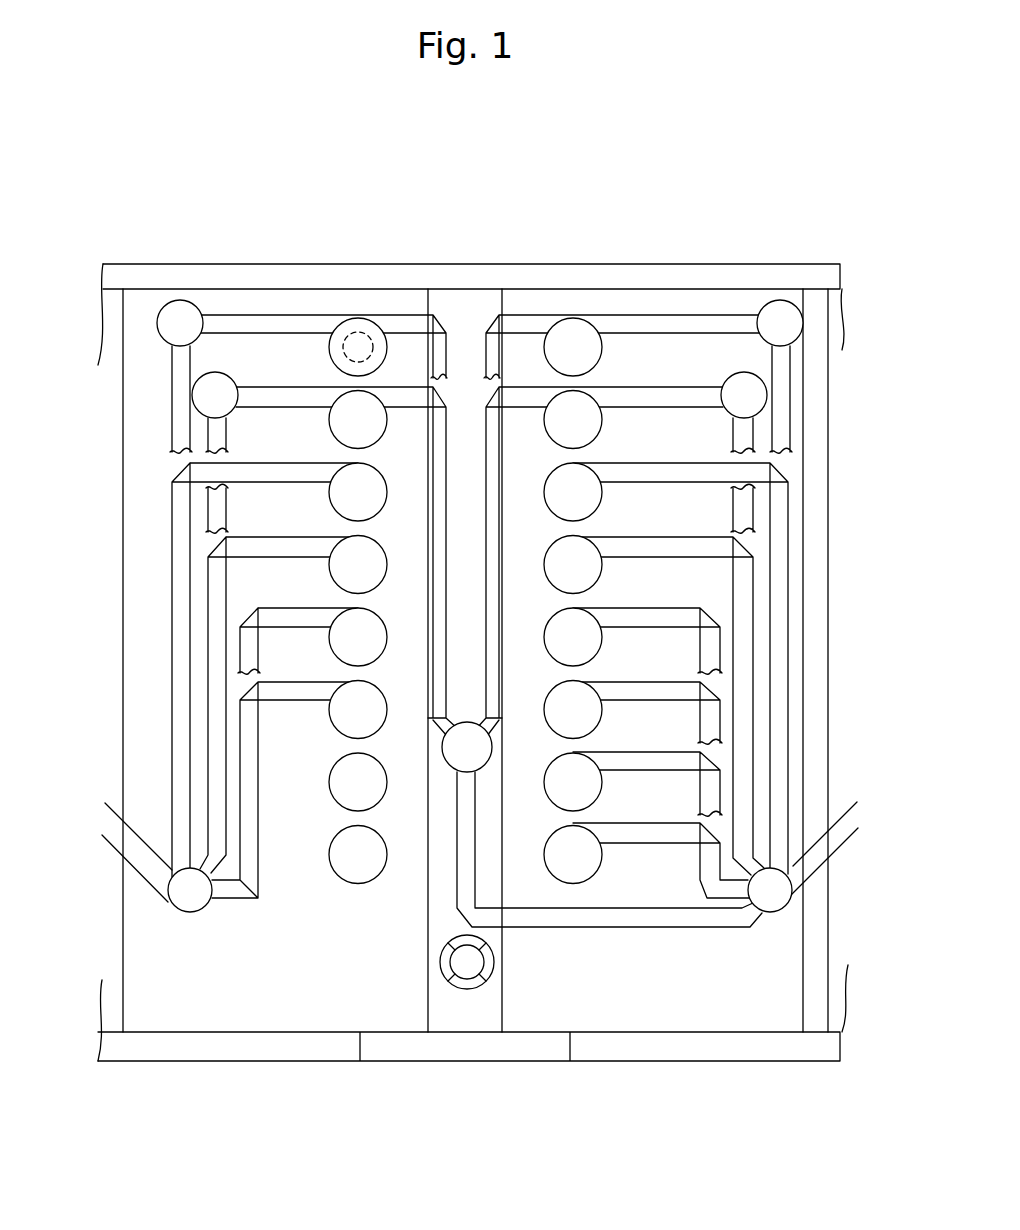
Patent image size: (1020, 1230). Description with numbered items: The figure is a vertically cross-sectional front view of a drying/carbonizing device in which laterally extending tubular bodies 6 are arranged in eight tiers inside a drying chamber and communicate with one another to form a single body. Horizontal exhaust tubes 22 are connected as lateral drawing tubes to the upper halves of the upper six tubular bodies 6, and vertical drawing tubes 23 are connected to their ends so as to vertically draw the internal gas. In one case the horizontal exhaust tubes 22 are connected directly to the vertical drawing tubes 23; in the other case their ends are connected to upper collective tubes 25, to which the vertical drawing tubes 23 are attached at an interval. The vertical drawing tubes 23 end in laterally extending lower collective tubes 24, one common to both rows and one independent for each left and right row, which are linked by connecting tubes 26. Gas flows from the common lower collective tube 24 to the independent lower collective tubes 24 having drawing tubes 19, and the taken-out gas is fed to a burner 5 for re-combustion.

The burner 5 is at (470, 980).
The tubular body 6 is at (360, 335).
The drawing tube 19 is at (137, 860).
The horizontal exhaust tube 22 is at (240, 316).
The vertical drawing tube 23 is at (437, 560).
The lower collective tube 24 is at (188, 912).
The upper collective tube 25 is at (180, 318).
The connecting tube 26 is at (603, 920).